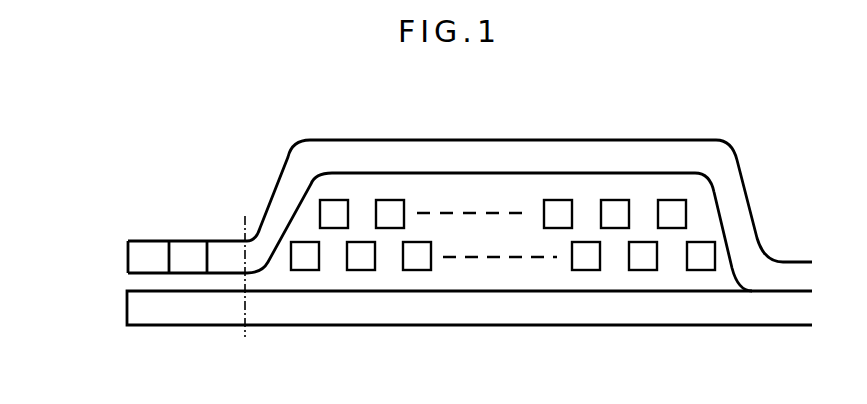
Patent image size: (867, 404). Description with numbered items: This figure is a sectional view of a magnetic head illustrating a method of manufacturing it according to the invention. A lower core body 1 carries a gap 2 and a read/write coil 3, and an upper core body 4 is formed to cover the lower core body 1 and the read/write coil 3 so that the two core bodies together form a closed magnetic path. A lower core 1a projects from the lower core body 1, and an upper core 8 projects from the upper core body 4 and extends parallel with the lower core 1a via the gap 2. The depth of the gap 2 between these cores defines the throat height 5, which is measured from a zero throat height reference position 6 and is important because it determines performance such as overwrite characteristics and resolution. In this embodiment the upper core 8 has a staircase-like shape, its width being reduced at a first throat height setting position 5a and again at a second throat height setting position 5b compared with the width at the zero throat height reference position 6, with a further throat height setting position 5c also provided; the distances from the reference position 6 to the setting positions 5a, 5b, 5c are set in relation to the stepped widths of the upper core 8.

The lower core body 1 is at (360, 317).
The lower core 1a is at (183, 317).
The gap 2 is at (142, 282).
The read/write coil 3 is at (323, 206).
The upper core body 4 is at (487, 148).
The throat height 5 is at (110, 236).
The first throat height setting position 5a is at (209, 257).
The second throat height setting position 5b is at (169, 258).
The third throat height setting position 5c is at (128, 253).
The zero throat height reference position 6 is at (247, 308).
The upper core 8 is at (142, 260).